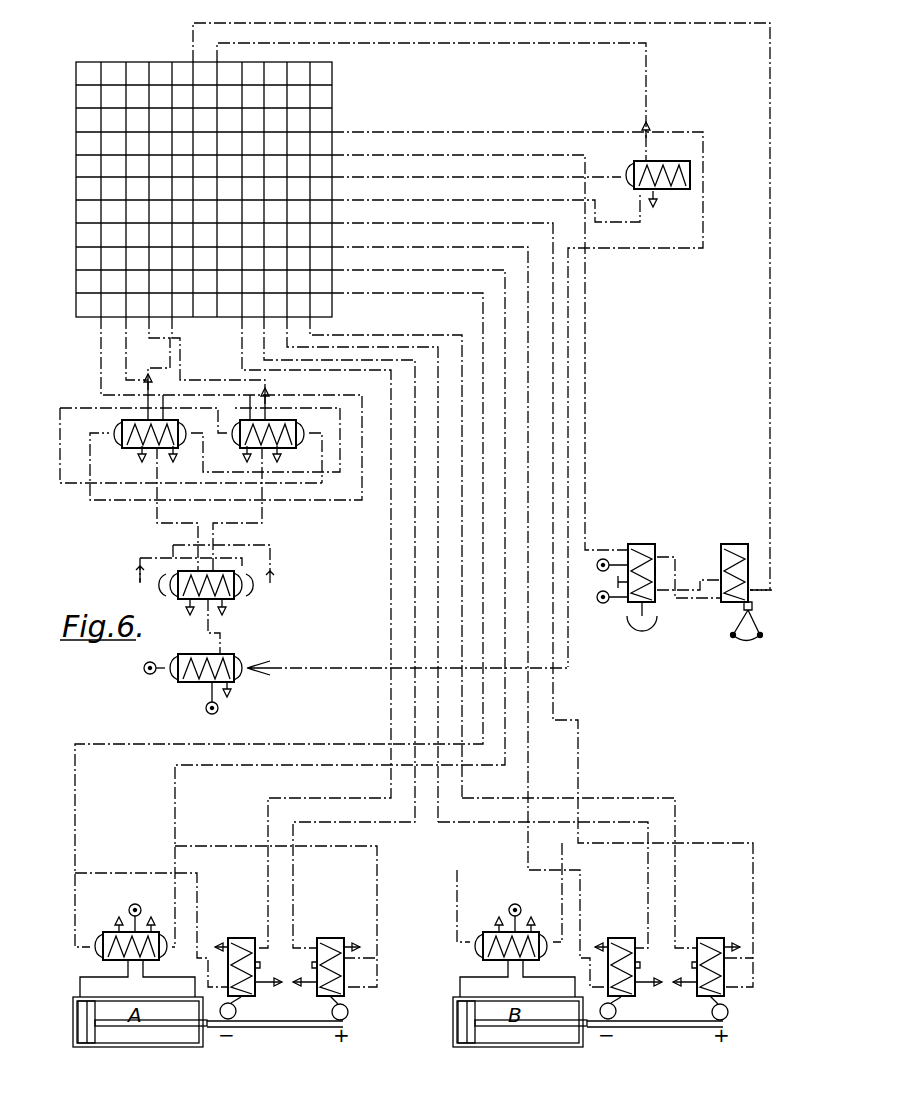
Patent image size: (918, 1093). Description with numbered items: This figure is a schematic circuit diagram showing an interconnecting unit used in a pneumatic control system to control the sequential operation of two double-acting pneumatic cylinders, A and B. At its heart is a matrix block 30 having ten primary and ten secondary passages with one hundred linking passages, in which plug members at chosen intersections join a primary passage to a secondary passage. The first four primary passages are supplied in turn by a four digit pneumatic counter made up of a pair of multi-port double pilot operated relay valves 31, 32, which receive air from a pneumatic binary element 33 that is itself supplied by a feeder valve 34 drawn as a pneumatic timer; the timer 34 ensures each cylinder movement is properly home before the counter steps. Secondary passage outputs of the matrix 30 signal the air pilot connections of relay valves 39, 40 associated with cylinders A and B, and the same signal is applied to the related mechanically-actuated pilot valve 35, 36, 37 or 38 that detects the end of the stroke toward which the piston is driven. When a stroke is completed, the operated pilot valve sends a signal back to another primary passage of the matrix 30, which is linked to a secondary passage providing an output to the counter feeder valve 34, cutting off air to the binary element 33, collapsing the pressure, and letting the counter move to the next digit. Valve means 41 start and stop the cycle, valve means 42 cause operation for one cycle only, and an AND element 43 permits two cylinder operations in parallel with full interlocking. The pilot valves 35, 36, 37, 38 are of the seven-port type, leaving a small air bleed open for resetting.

The matrix block 30 is at (333, 95).
The multi-port double pilot operated relay valve 31 is at (125, 447).
The multi-port double pilot operated relay valve 32 is at (243, 447).
The pneumatic binary element 33 is at (236, 597).
The feeder valve 34 is at (182, 683).
The pilot valve 35 is at (236, 938).
The pilot valve 36 is at (332, 938).
The pilot valve 37 is at (616, 938).
The pilot valve 38 is at (712, 938).
The relay valve 39 is at (108, 932).
The relay valve 40 is at (488, 932).
The valve means for starting and stopping 41 is at (731, 544).
The valve means for one cycle operation 42 is at (645, 544).
The AND element 43 is at (678, 190).